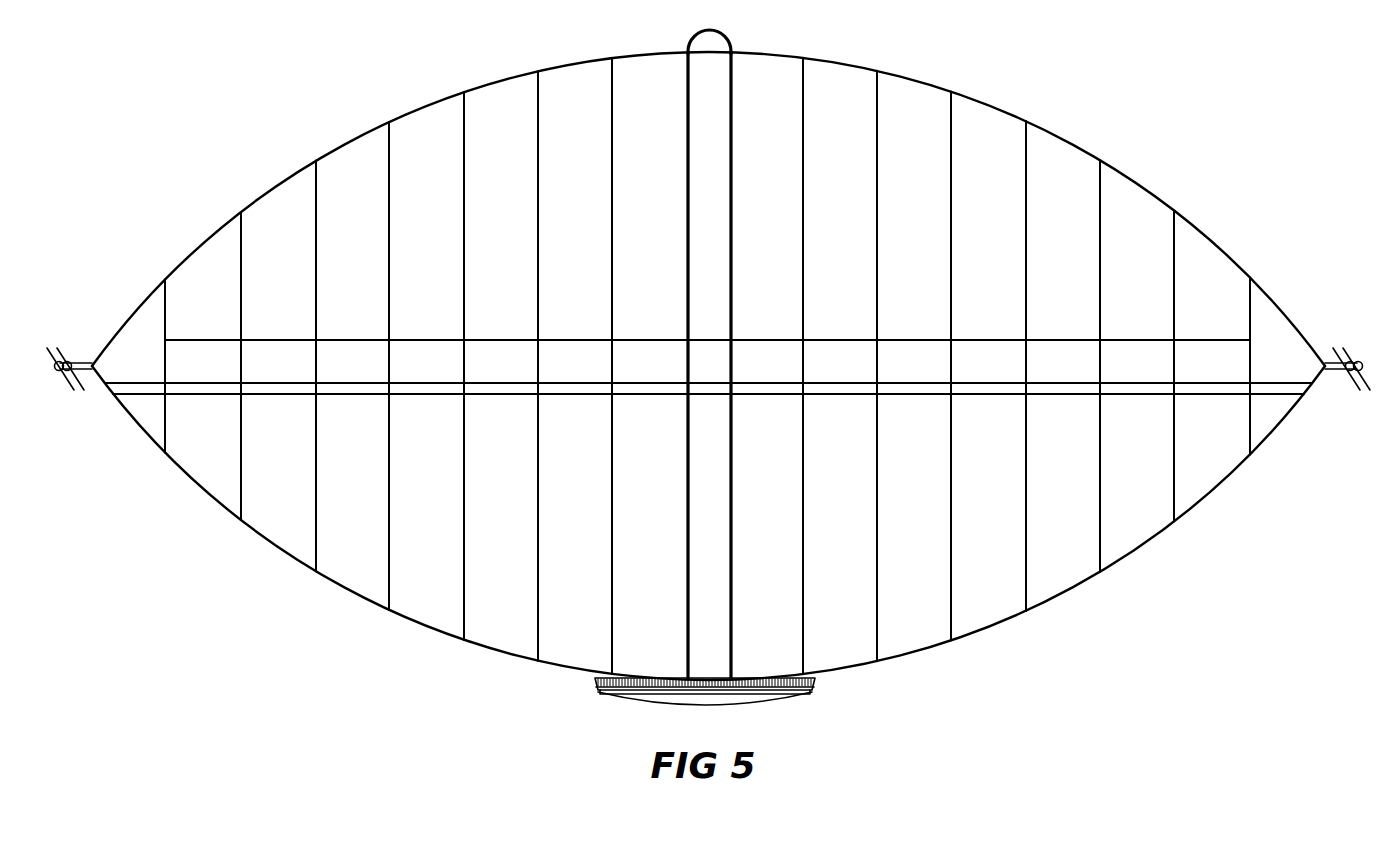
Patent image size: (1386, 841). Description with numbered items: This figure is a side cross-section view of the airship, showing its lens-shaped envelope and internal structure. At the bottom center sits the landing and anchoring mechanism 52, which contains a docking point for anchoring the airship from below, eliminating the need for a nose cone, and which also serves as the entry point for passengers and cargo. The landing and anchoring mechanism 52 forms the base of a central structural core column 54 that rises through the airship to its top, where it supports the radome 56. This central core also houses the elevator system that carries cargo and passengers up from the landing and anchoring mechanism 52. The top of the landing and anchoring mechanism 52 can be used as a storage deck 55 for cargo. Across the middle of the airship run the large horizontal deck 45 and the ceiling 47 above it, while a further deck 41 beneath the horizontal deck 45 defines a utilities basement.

The deck 41 is at (1115, 394).
The ceiling 47 is at (1200, 340).
The large horizontal deck 45 is at (1220, 380).
The central structural core column 54 is at (687, 488).
The radome 56 is at (690, 38).
The storage deck 55 is at (673, 680).
The landing and anchoring mechanism 52 is at (702, 706).